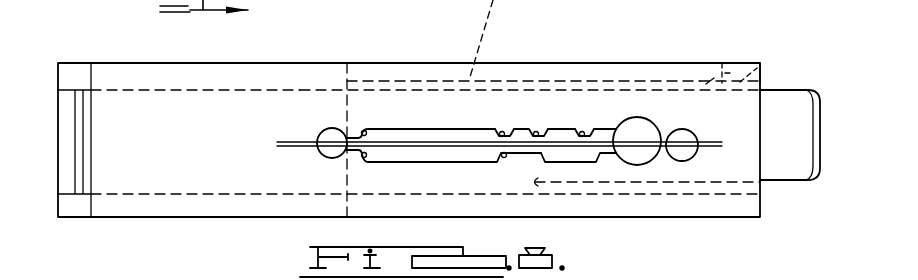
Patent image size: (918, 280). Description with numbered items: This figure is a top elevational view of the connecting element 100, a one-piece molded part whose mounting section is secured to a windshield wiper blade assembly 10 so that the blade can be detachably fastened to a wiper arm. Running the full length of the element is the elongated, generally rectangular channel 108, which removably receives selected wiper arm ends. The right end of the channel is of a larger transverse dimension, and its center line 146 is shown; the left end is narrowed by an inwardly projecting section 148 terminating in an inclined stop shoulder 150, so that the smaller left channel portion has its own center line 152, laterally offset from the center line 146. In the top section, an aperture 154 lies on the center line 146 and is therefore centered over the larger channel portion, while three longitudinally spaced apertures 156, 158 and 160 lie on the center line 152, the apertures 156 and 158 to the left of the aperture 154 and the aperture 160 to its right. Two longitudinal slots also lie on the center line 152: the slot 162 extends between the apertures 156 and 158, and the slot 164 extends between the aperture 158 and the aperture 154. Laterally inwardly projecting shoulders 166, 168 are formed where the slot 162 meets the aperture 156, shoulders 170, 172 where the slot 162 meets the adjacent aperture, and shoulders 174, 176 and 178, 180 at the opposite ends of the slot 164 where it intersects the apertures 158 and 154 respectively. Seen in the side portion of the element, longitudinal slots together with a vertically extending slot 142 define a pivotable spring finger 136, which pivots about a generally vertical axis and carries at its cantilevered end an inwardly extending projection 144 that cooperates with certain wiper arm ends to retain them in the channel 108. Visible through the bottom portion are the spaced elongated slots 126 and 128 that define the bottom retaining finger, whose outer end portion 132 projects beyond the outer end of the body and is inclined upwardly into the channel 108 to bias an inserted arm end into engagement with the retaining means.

The blade assembly 10 is at (226, 15).
The connecting element 100 is at (337, 61).
The channel shaped recess 108 is at (492, 88).
The inwardly projecting section 148 is at (254, 88).
The stop shoulder 150 is at (370, 88).
The slot 162 is at (412, 130).
The aperture 158 is at (532, 130).
The slot 164 is at (578, 130).
The slot 128 is at (618, 76).
The shoulder 178 is at (605, 132).
The spring finger 136 is at (678, 70).
The vertically extending slot 142 is at (728, 66).
The inwardly extending projection 144 is at (763, 63).
The outer end portion 132 is at (800, 135).
The aperture 154 is at (641, 118).
The aperture 160 is at (680, 134).
The shoulder 166 is at (364, 132).
The center line 146 is at (458, 128).
The shoulder 170 is at (500, 132).
The shoulder 174 is at (548, 132).
The center line 152 is at (274, 163).
The aperture 156 is at (328, 153).
The shoulder 168 is at (357, 155).
The shoulder 172 is at (505, 160).
The shoulder 176 is at (550, 158).
The shoulder 180 is at (610, 158).
The slot 126 is at (696, 184).